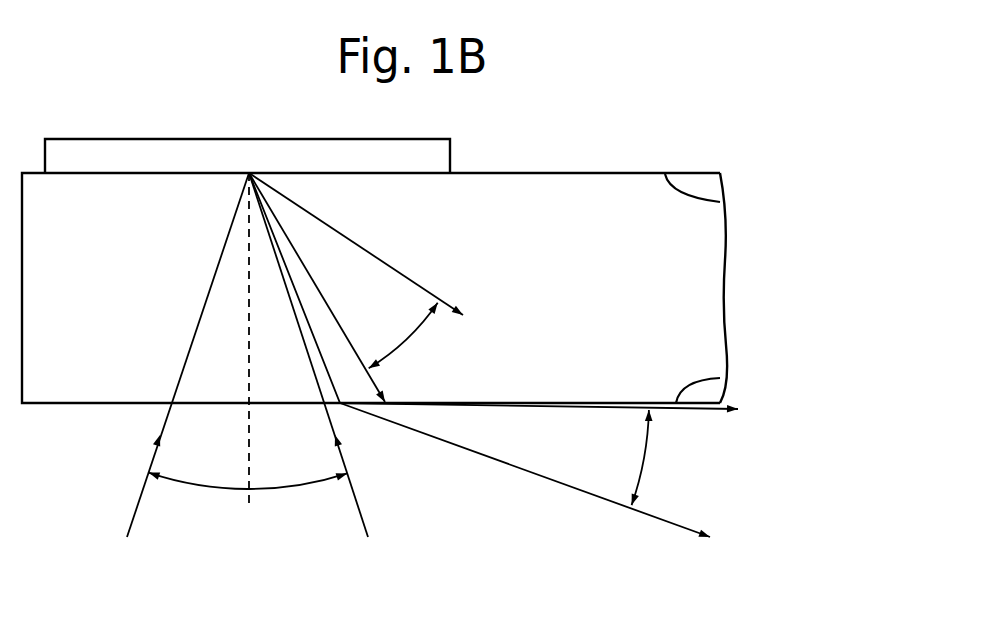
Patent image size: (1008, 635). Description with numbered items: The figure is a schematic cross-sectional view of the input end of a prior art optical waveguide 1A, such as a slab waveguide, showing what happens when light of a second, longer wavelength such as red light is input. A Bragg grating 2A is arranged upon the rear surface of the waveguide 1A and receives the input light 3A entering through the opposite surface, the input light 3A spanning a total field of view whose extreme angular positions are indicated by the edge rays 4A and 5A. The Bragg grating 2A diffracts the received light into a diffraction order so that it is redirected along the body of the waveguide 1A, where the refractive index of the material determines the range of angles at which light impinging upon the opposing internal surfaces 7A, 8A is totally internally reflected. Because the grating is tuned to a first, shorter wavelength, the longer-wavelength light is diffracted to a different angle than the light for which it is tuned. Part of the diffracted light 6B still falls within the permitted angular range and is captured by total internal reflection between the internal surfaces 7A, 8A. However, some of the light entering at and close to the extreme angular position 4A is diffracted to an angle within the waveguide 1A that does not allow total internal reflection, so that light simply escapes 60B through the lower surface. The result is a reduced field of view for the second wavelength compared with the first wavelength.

The optical waveguide 1A is at (597, 190).
The Bragg grating 2A is at (118, 150).
The input light 3A is at (187, 483).
The extreme angular position of the total field of view 4A is at (135, 507).
The extreme angular position of the total field of view 5A is at (362, 508).
The light propagating by TIR 6B is at (412, 327).
The internal surface 7A is at (720, 202).
The internal surface 8A is at (720, 378).
The escaping light 60B is at (638, 472).